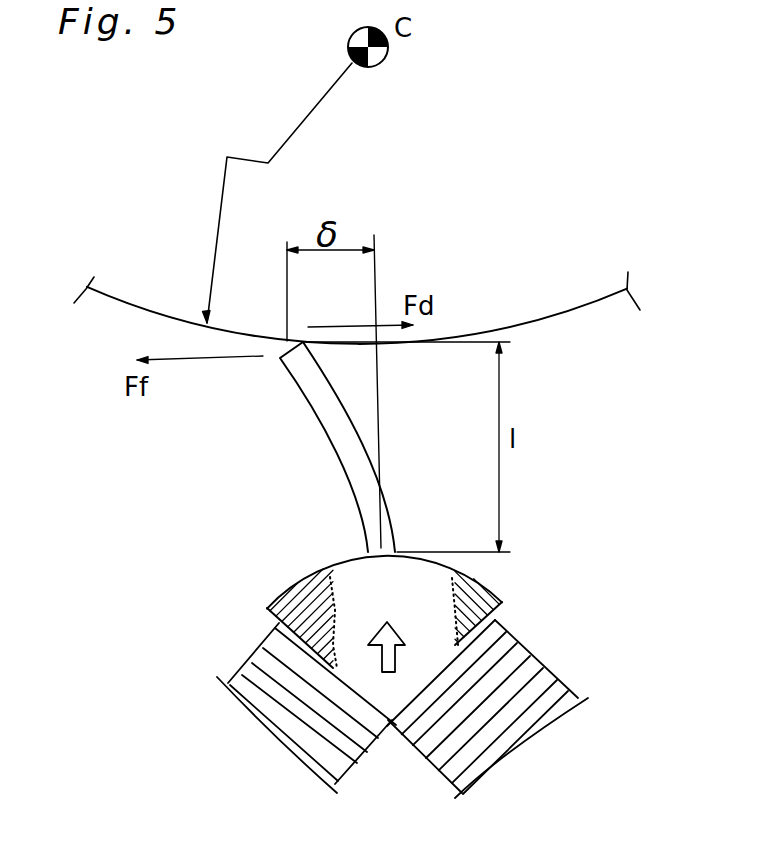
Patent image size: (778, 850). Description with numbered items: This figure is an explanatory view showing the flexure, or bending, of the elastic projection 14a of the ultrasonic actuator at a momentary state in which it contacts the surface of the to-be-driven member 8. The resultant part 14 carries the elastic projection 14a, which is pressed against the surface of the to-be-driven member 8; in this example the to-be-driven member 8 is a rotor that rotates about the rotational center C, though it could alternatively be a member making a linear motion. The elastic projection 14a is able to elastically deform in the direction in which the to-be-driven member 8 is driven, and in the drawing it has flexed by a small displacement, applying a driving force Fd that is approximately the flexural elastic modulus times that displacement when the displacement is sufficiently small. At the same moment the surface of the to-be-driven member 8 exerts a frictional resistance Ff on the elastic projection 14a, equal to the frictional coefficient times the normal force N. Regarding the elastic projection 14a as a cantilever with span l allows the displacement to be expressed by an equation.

The to-be-driven member 8 is at (530, 232).
The resultant part 14 is at (293, 584).
The elastic projection 14a is at (328, 410).